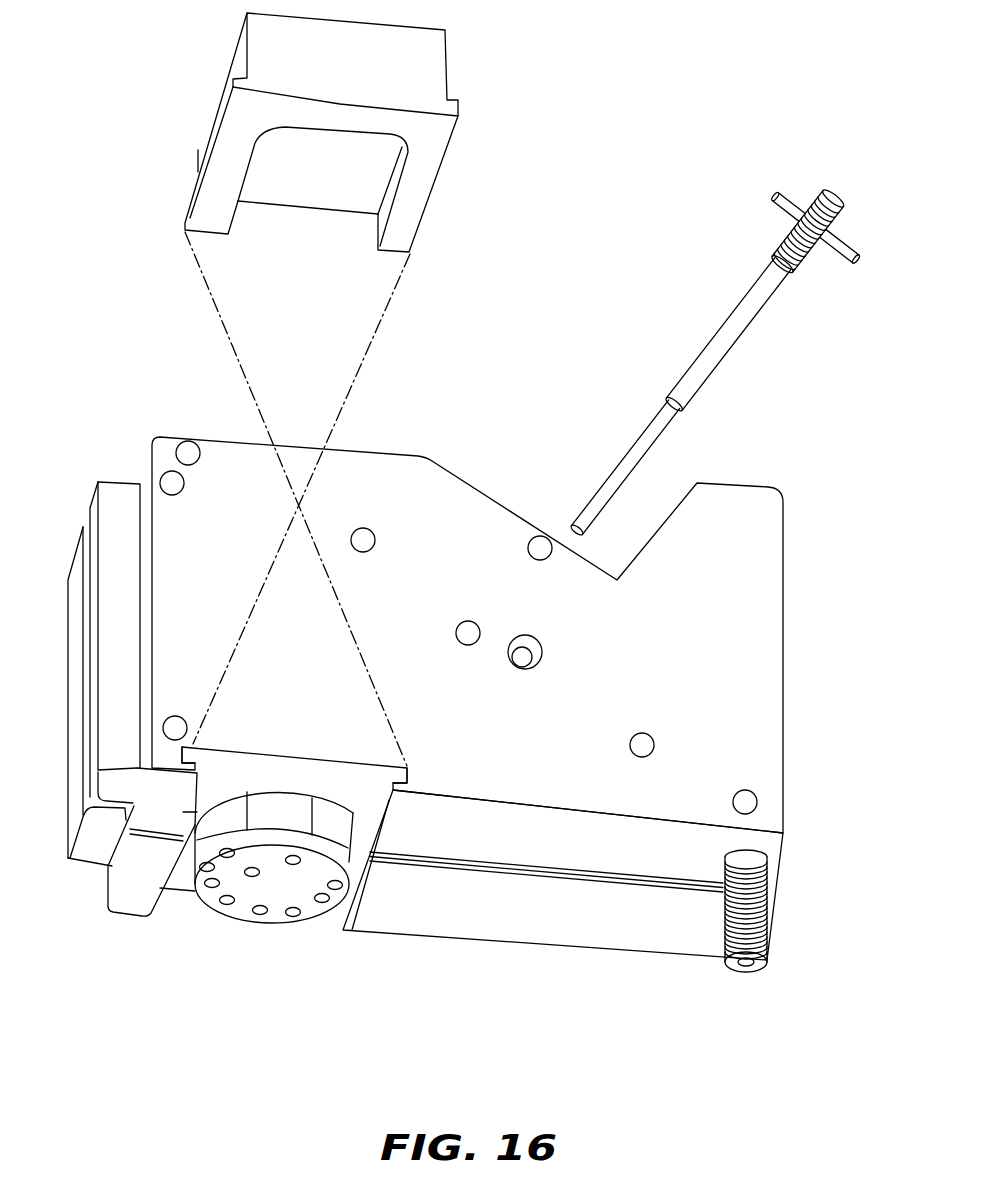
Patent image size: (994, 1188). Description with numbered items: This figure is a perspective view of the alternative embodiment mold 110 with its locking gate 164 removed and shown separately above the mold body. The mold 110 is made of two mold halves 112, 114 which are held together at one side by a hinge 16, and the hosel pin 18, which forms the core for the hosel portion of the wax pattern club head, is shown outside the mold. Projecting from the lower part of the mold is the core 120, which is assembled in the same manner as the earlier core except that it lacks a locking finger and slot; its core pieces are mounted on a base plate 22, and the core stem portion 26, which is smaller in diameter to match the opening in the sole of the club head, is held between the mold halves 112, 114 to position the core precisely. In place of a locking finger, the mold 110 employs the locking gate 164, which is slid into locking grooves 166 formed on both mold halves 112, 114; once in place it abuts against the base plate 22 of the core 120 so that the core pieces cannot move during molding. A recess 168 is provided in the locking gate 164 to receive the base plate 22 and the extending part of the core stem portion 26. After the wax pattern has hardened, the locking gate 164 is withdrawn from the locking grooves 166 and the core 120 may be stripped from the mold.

The hinge 16 is at (123, 493).
The hosel pin 18 is at (747, 323).
The base plate 22 is at (292, 921).
The core stem portion 26 is at (190, 831).
The mold 110 is at (523, 635).
The mold half 112 is at (603, 947).
The mold half 114 is at (770, 763).
The core 120 is at (318, 917).
The locking gate 164 is at (356, 389).
The locking grooves 166 is at (196, 744).
The recess 168 is at (343, 202).